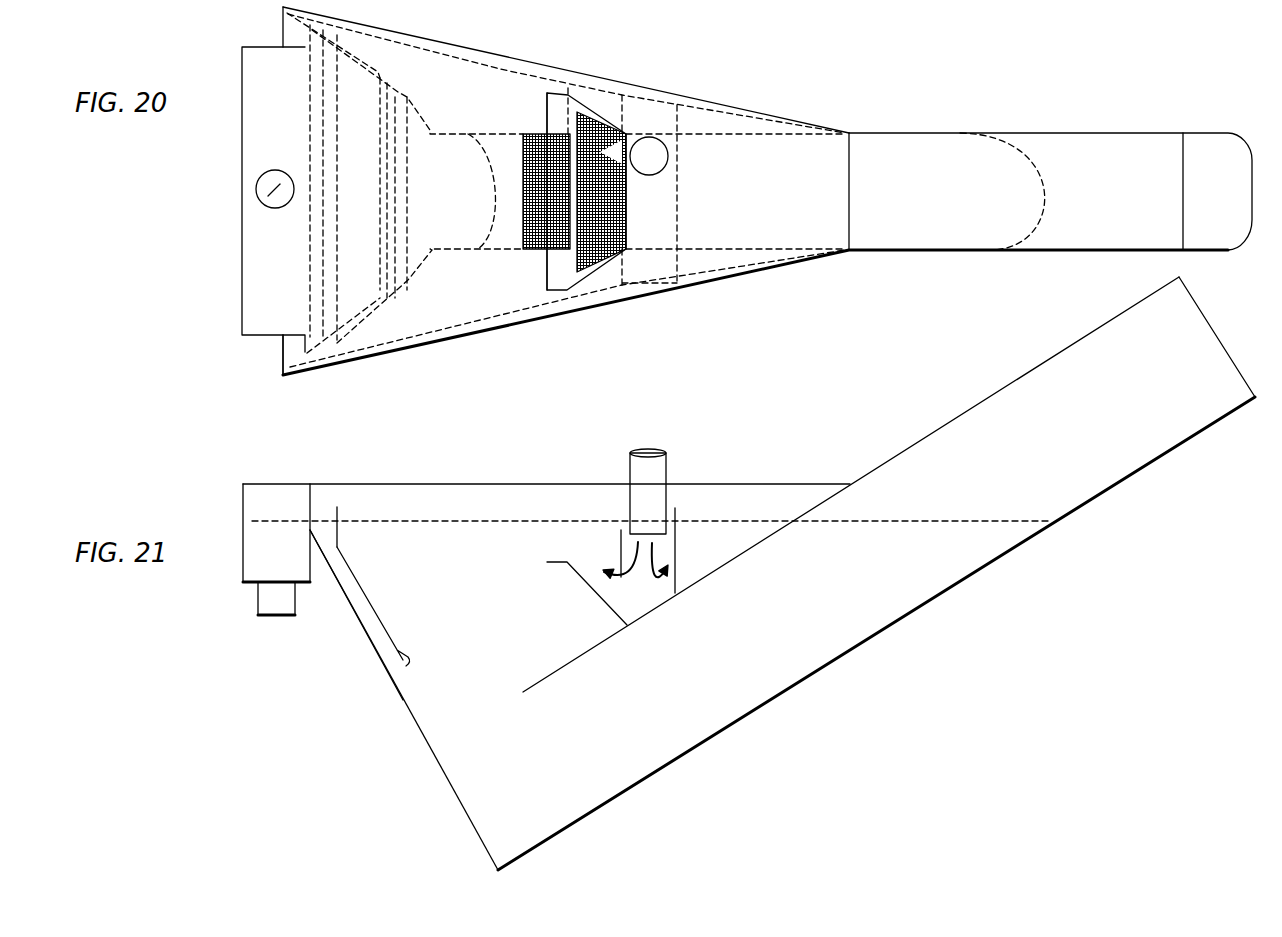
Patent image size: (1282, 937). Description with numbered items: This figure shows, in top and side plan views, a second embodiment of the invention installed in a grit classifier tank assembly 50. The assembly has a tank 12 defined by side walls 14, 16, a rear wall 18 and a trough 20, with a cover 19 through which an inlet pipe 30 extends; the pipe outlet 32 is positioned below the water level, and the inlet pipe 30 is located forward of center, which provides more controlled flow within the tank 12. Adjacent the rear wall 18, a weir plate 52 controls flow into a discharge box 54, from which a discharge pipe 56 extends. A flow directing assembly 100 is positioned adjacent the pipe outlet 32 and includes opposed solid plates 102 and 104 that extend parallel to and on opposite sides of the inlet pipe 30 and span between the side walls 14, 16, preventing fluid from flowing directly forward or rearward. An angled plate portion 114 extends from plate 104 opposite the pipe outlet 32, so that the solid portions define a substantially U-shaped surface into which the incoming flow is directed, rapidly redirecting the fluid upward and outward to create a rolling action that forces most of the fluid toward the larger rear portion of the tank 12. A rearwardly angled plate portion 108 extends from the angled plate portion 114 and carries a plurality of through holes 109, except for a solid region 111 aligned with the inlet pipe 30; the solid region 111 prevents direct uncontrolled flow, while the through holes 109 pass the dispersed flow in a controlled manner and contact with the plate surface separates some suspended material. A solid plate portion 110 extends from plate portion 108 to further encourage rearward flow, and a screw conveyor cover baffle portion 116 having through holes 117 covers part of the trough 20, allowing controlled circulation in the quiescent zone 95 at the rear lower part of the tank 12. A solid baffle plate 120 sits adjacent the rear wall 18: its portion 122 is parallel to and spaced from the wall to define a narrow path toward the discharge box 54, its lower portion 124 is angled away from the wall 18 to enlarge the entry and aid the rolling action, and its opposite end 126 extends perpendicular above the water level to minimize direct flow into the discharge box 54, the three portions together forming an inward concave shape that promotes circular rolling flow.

In FIG. 21, the tank 12 is at (821, 480).
In FIG. 20, the side wall 14 is at (660, 262).
In FIG. 20, the side wall 16 is at (682, 108).
In FIG. 20, the rear wall 18 is at (288, 372).
In FIG. 21, the rear wall 18 is at (420, 730).
In FIG. 21, the cover 19 is at (775, 483).
In FIG. 20, the trough 20 is at (995, 250).
In FIG. 21, the trough 20 is at (960, 556).
In FIG. 20, the inlet pipe 30 is at (655, 158).
In FIG. 21, the inlet pipe 30 is at (668, 465).
In FIG. 21, the pipe outlet 32 is at (660, 540).
In FIG. 20, the grit classifier tank assembly 50 is at (767, 191).
In FIG. 21, the grit classifier tank assembly 50 is at (749, 573).
In FIG. 20, the weir plate 52 is at (313, 355).
In FIG. 21, the weir plate 52 is at (345, 585).
In FIG. 20, the discharge box 54 is at (252, 204).
In FIG. 21, the discharge box 54 is at (287, 547).
In FIG. 20, the discharge pipe 56 is at (270, 200).
In FIG. 21, the discharge pipe 56 is at (258, 597).
In FIG. 21, the quiescent zone 95 is at (462, 756).
In FIG. 20, the flow directing assembly 100 is at (608, 108).
In FIG. 21, the flow directing assembly 100 is at (668, 605).
In FIG. 21, the solid plate 102 is at (620, 552).
In FIG. 20, the solid plate 104 is at (680, 268).
In FIG. 21, the solid plate 104 is at (680, 512).
In FIG. 20, the rearwardly angled plate portion 108 is at (592, 258).
In FIG. 21, the rearwardly angled plate portion 108 is at (583, 572).
In FIG. 20, the through holes 109 is at (616, 207).
In FIG. 21, the through holes 109 is at (598, 596).
In FIG. 20, the solid plate portion 110 is at (560, 262).
In FIG. 21, the solid plate portion 110 is at (553, 562).
In FIG. 20, the solid region 111 is at (600, 140).
In FIG. 21, the angled plate portion 114 is at (645, 615).
In FIG. 20, the screw conveyor cover baffle portion 116 is at (540, 265).
In FIG. 21, the screw conveyor cover baffle portion 116 is at (572, 662).
In FIG. 20, the through holes 117 is at (523, 250).
In FIG. 21, the through holes 117 is at (535, 683).
In FIG. 20, the solid baffle plate 120 is at (412, 304).
In FIG. 21, the solid baffle plate 120 is at (362, 563).
In FIG. 20, the parallel portion 122 is at (372, 58).
In FIG. 21, the parallel portion 122 is at (373, 613).
In FIG. 20, the lower angled portion 124 is at (410, 68).
In FIG. 21, the lower angled portion 124 is at (395, 663).
In FIG. 20, the upper end portion 126 is at (340, 350).
In FIG. 21, the upper end portion 126 is at (340, 522).